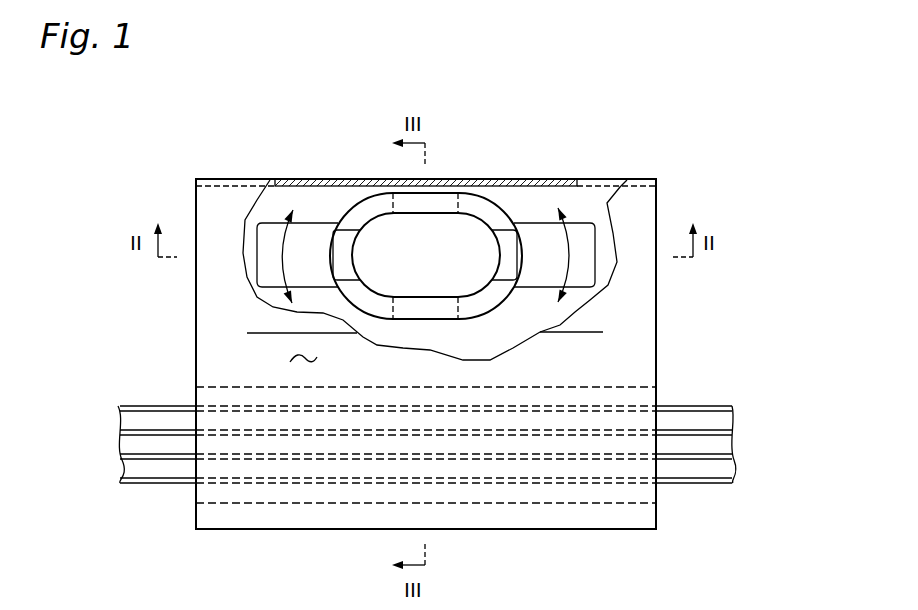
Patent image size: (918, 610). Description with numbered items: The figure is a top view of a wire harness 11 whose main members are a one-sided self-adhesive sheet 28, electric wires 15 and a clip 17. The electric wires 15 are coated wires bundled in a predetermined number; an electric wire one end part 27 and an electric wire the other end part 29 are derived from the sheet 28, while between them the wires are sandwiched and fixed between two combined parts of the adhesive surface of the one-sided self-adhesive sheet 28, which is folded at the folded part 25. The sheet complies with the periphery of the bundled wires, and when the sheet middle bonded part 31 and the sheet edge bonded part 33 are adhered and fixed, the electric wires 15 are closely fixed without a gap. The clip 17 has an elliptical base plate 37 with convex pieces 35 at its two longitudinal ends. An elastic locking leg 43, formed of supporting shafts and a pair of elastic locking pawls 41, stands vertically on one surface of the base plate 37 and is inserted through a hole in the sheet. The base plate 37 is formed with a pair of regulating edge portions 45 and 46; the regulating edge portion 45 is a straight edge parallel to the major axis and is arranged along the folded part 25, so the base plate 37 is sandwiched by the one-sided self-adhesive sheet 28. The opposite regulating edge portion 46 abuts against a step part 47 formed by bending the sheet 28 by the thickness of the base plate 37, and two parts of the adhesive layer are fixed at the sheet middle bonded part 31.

The wire harness 11 is at (610, 115).
The electric wires 15 is at (697, 485).
The clip 17 is at (533, 183).
The folded part 25 is at (625, 178).
The electric wire one end part 27 is at (117, 445).
The one-sided self-adhesive sheet 28 is at (657, 285).
The electric wire the other end part 29 is at (733, 437).
The sheet middle bonded part 31 is at (300, 360).
The sheet edge bonded part 33 is at (607, 530).
The convex pieces 35 is at (275, 227).
The base plate 37 is at (493, 295).
The elastic locking pawls 41 is at (353, 233).
The elastic locking leg 43 is at (518, 197).
The regulating edge portion 45 is at (479, 211).
The regulating edge portion 46 is at (448, 320).
The step part 47 is at (260, 333).